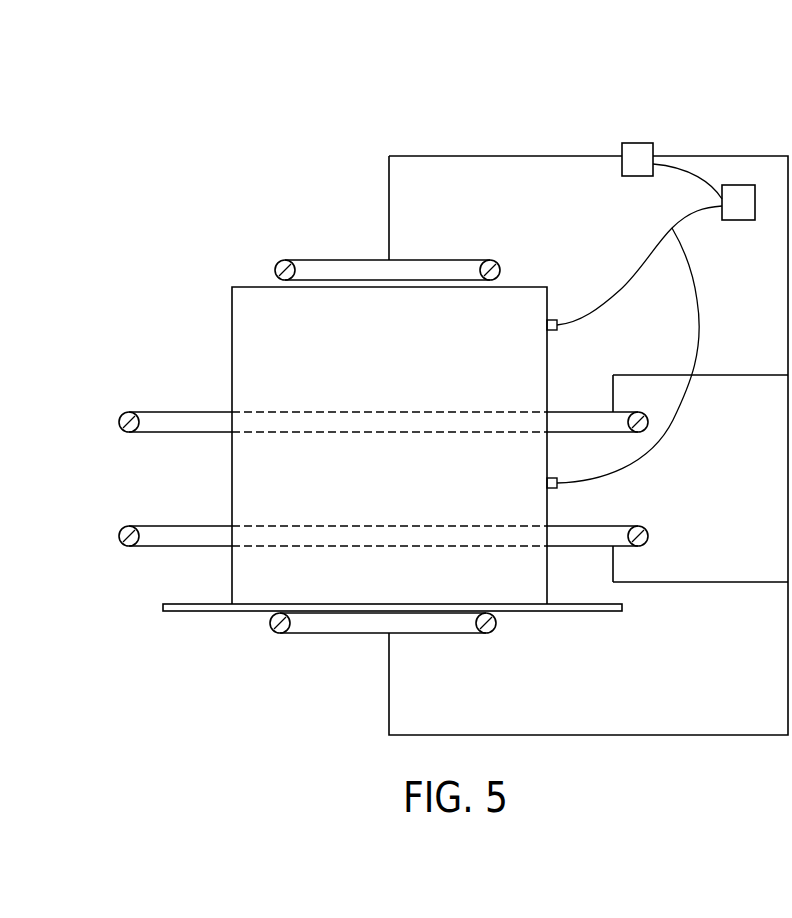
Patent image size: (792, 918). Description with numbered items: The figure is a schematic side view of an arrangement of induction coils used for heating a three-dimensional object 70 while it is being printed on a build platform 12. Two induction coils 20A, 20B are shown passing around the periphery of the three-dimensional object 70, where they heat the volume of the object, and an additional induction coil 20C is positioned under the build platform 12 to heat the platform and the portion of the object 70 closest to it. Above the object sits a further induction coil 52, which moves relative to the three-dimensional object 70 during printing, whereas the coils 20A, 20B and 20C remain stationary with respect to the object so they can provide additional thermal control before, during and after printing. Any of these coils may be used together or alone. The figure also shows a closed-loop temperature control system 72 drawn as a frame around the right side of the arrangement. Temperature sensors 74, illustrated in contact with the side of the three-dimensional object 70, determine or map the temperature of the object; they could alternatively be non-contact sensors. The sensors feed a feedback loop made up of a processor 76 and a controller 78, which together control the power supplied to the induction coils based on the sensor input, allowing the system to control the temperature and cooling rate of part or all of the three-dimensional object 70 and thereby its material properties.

The build platform 12 is at (572, 612).
The induction coil 20A is at (180, 410).
The induction coil 20B is at (180, 525).
The induction coil 20C is at (450, 637).
The induction coil 52 is at (430, 258).
The 3D object 70 is at (548, 383).
The closed-loop temperature control system 72 is at (728, 137).
The temperature sensor 74 is at (556, 320).
The processor 76 is at (737, 220).
The controller 78 is at (637, 143).